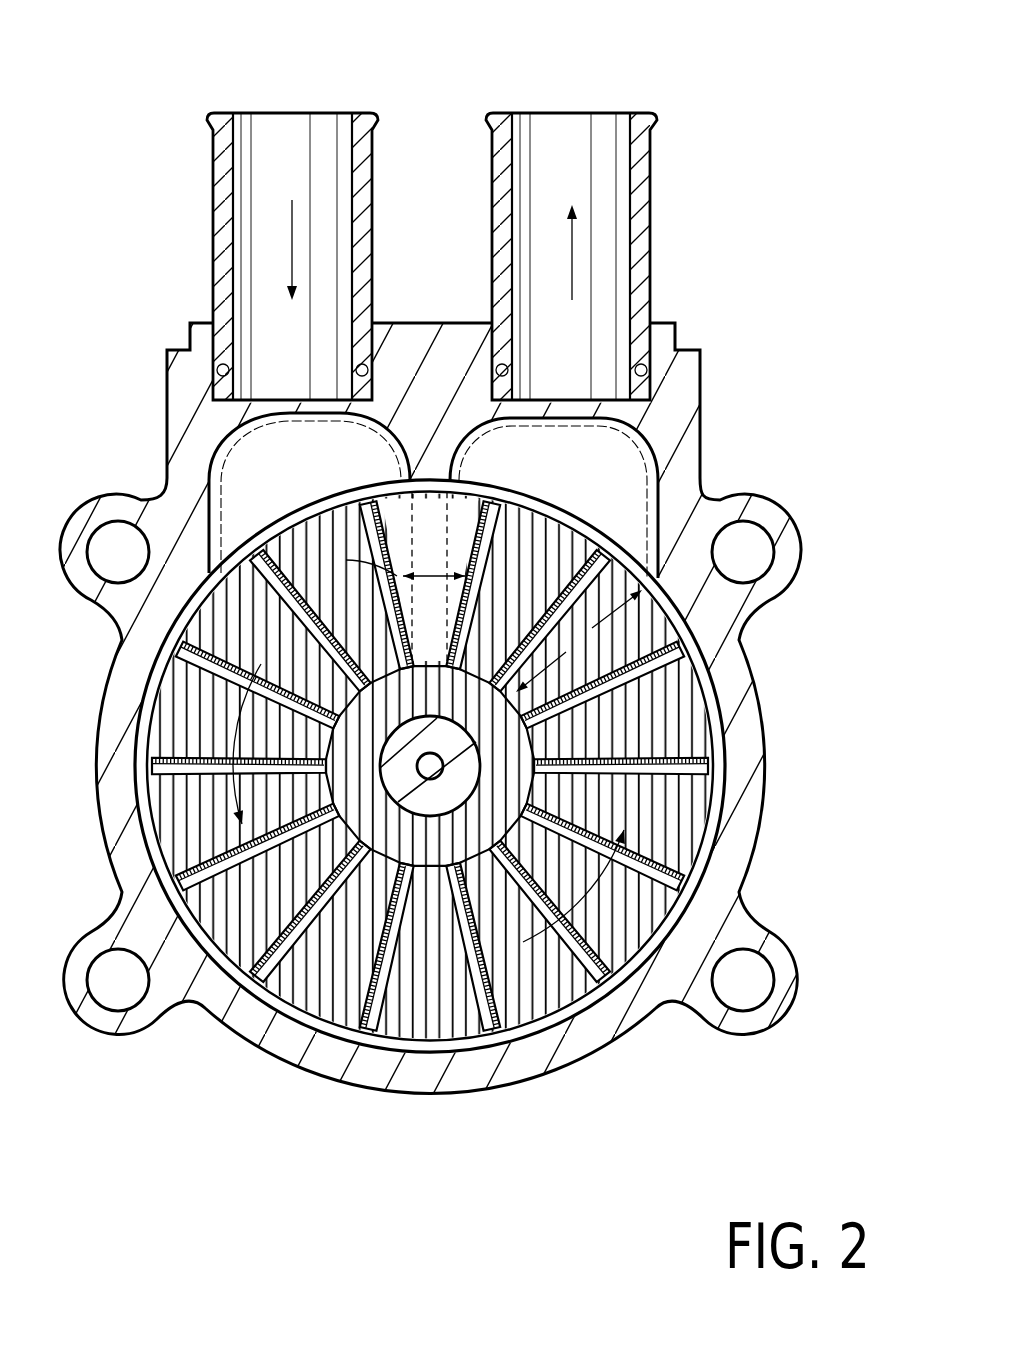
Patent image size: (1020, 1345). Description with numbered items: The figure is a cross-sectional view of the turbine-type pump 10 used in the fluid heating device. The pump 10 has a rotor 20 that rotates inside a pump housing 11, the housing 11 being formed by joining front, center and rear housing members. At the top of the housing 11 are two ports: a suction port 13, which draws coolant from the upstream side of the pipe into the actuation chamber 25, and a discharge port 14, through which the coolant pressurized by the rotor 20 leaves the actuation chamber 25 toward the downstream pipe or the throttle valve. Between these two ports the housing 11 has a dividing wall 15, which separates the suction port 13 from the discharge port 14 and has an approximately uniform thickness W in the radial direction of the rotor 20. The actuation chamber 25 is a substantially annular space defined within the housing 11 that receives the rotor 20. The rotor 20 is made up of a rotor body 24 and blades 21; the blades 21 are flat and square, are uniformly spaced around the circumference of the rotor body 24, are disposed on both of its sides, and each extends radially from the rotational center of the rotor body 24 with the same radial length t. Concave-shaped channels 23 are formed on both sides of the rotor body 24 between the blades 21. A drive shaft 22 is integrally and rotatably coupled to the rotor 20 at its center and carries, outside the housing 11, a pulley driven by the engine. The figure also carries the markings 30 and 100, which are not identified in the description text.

The pump 10 is at (510, 672).
The pump housing 11 is at (688, 388).
The suction port 13 is at (250, 116).
The discharge port 14 is at (620, 116).
The dividing wall 15 is at (408, 514).
The rotor 20 is at (514, 766).
The blades 21 is at (496, 765).
The drive shaft 22 is at (414, 805).
The concave-shaped channels 23 is at (508, 765).
The rotor body 24 is at (430, 808).
The actuation chamber 25 is at (514, 766).
The motor 30 is at (213, 1083).
The section line 100 is at (433, 52).